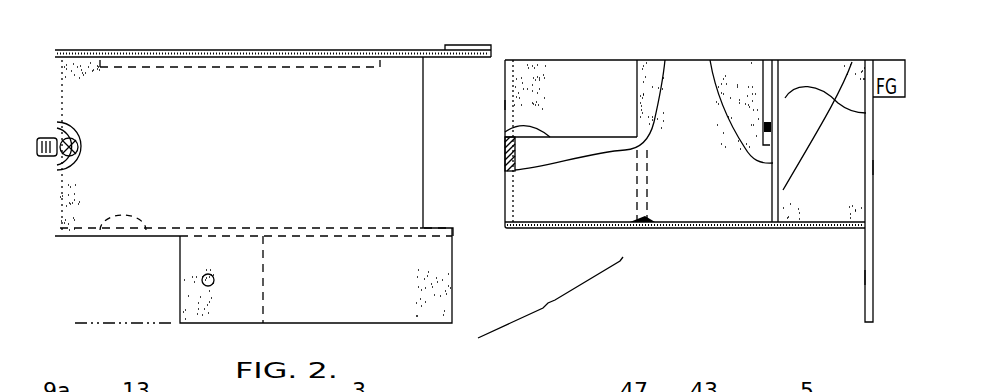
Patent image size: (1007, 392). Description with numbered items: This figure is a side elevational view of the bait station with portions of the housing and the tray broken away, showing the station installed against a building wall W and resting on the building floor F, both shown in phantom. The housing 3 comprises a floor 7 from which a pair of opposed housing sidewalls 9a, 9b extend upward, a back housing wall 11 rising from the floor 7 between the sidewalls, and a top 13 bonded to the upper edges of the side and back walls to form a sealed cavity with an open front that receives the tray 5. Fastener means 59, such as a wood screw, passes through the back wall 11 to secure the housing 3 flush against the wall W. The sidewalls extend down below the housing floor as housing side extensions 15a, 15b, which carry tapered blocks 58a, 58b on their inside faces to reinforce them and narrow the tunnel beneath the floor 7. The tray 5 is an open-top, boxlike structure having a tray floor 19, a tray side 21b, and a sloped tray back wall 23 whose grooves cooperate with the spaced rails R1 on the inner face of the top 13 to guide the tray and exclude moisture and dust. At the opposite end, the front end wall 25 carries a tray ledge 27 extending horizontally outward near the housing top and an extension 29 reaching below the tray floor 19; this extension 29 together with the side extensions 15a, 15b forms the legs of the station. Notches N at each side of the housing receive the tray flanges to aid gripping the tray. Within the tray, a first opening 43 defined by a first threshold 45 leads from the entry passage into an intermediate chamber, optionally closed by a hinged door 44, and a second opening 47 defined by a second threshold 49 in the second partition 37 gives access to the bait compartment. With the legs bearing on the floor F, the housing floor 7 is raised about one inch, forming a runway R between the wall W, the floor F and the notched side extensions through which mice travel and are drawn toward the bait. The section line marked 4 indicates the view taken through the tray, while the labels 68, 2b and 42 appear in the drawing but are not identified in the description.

The housing 3 is at (86, 273).
The section line 4- 4 is at (538, 270).
The wall W is at (57, 42).
The top 13 is at (256, 50).
The end cap 68 is at (445, 45).
The rails R1 is at (308, 73).
The back housing wall 11 is at (70, 168).
The fastener means 59 is at (70, 124).
The notches N is at (433, 99).
The floor 7 is at (88, 247).
The runway R is at (130, 263).
The housing sidewall 9a is at (137, 259).
The housing sidewall 9b is at (190, 202).
The floor F is at (139, 334).
The housing side extension 15a is at (348, 299).
The housing side extension 15b is at (392, 301).
The tapered block 58a is at (316, 279).
The tapered block 58b is at (266, 288).
The housing 2b is at (570, 60).
The tray back wall 23 is at (506, 104).
The second threshold 49 is at (506, 128).
The second opening 47 is at (636, 78).
The contact 42 is at (642, 117).
The tray 5 is at (706, 56).
The hinged door 44 is at (760, 128).
The second partition 37 is at (736, 74).
The first opening 43 is at (785, 98).
The tray ledge 27 is at (888, 60).
The first threshold 45 is at (890, 109).
The front end wall 25 is at (905, 132).
The tray floor 19 is at (653, 226).
The tray side 21b is at (710, 204).
The extension 29 is at (865, 276).